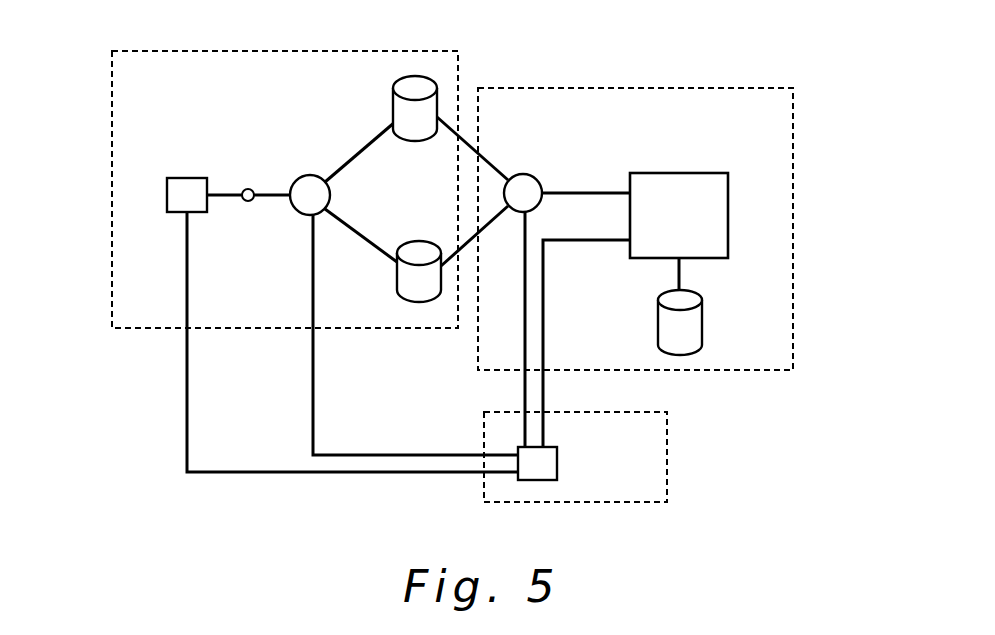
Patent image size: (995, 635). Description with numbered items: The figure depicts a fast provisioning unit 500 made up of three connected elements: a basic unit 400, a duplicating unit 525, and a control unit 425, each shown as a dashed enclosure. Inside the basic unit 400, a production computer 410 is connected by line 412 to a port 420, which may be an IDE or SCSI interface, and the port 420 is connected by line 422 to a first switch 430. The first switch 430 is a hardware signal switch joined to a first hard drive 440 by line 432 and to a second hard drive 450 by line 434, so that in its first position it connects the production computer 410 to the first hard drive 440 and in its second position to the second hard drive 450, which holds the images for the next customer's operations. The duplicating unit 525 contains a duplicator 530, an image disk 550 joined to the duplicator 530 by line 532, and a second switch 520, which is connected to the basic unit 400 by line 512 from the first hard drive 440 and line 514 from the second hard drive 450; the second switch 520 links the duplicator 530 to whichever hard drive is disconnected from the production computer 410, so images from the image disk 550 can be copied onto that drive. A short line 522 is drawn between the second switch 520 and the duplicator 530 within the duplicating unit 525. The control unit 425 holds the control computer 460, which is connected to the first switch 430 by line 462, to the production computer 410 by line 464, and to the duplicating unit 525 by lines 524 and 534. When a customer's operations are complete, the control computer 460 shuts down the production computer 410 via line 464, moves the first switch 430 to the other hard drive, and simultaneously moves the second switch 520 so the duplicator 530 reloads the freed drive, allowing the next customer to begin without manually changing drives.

The basic unit 400 is at (112, 190).
The production computer 410 is at (167, 197).
The line 412 is at (220, 197).
The port 420 is at (247, 188).
The line 422 is at (273, 190).
The first switch 430 is at (310, 193).
The line 432 is at (353, 152).
The line 434 is at (363, 240).
The first hard drive 440 is at (415, 139).
The second hard drive 450 is at (421, 242).
The line 512 is at (463, 138).
The line 514 is at (463, 138).
The second switch 520 is at (522, 193).
The connection line 522 is at (583, 193).
The line 524 is at (525, 393).
The duplicating unit 525 is at (795, 232).
The duplicator 530 is at (680, 173).
The line 532 is at (679, 278).
The line 534 is at (583, 240).
The image disk 550 is at (657, 322).
The control unit 425 is at (667, 460).
The control computer 460 is at (557, 463).
The line 462 is at (313, 355).
The line 464 is at (187, 373).
The fast provisioning unit 500 is at (247, 513).